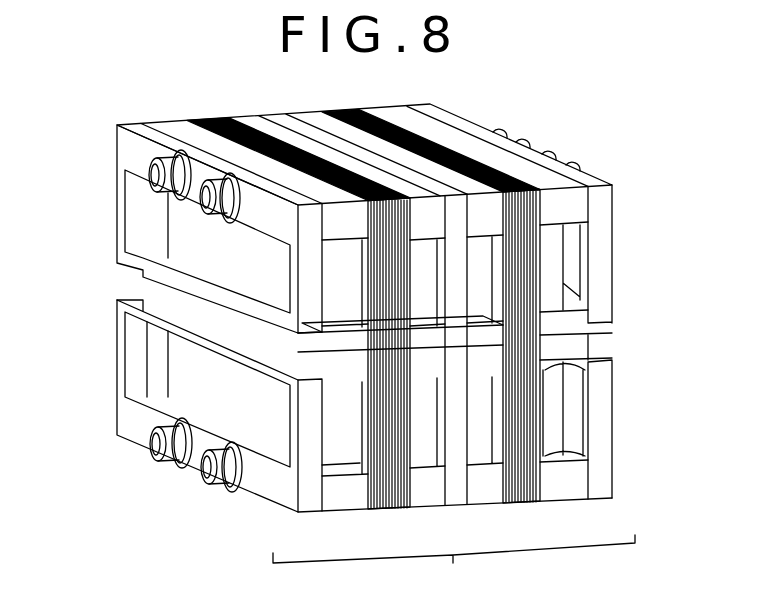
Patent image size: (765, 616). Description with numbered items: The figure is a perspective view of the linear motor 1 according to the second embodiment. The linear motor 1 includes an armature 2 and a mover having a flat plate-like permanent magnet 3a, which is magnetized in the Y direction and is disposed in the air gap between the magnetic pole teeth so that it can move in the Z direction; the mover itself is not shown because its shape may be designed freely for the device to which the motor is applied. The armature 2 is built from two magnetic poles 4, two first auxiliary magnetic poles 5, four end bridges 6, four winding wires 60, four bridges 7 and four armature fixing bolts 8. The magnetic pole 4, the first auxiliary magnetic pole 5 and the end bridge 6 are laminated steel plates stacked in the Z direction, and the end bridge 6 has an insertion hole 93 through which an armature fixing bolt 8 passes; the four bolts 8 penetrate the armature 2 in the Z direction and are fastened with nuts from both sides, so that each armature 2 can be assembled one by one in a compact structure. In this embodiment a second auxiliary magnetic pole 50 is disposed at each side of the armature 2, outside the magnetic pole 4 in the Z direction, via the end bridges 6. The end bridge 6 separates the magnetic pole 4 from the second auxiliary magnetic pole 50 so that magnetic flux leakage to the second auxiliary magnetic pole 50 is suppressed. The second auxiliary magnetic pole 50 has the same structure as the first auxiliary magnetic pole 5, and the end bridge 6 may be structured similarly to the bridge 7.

The linear motor 1 is at (648, 582).
The armature 2 is at (454, 566).
The permanent magnet 3a is at (362, 353).
The magnetic pole 4 is at (393, 486).
The first auxiliary magnetic pole 5 is at (284, 116).
The end bridge 6 is at (351, 485).
The bridge 7 is at (436, 486).
The armature fixing bolt 8 is at (148, 434).
The second auxiliary magnetic pole 50 is at (127, 157).
The winding wire 60 is at (177, 250).
The insertion hole 93 is at (185, 468).